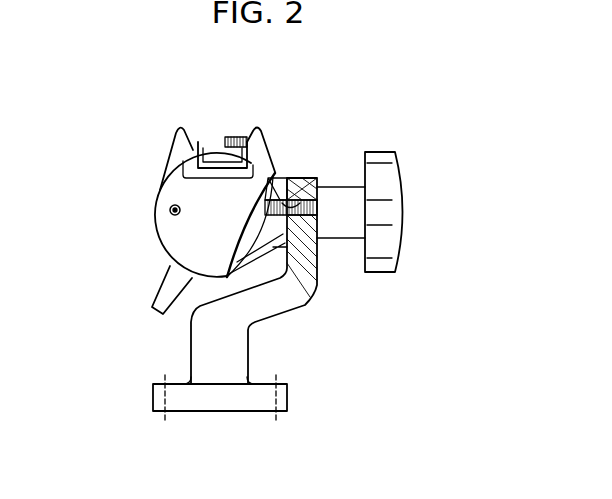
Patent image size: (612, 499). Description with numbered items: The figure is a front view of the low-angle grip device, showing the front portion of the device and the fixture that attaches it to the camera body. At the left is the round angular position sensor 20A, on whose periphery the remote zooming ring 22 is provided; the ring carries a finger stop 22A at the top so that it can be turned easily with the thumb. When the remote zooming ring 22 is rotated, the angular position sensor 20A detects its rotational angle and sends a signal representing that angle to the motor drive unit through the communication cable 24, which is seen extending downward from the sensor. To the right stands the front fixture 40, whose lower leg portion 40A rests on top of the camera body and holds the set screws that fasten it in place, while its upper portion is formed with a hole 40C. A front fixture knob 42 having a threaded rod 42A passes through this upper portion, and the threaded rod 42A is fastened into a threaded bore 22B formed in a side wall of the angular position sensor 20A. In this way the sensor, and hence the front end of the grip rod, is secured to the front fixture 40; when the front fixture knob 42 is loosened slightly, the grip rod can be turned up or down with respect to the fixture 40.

The angular position sensor 20A is at (172, 226).
The remote zooming ring 22 is at (255, 128).
The finger stop 22A is at (172, 150).
The threaded bore 22B is at (310, 235).
The communication cable 24 is at (153, 293).
The front fixture 40 is at (295, 305).
The lower leg portion 40A is at (288, 403).
The hole 40C is at (318, 205).
The front fixture knob 42 is at (408, 222).
The threaded rod 42A is at (292, 200).